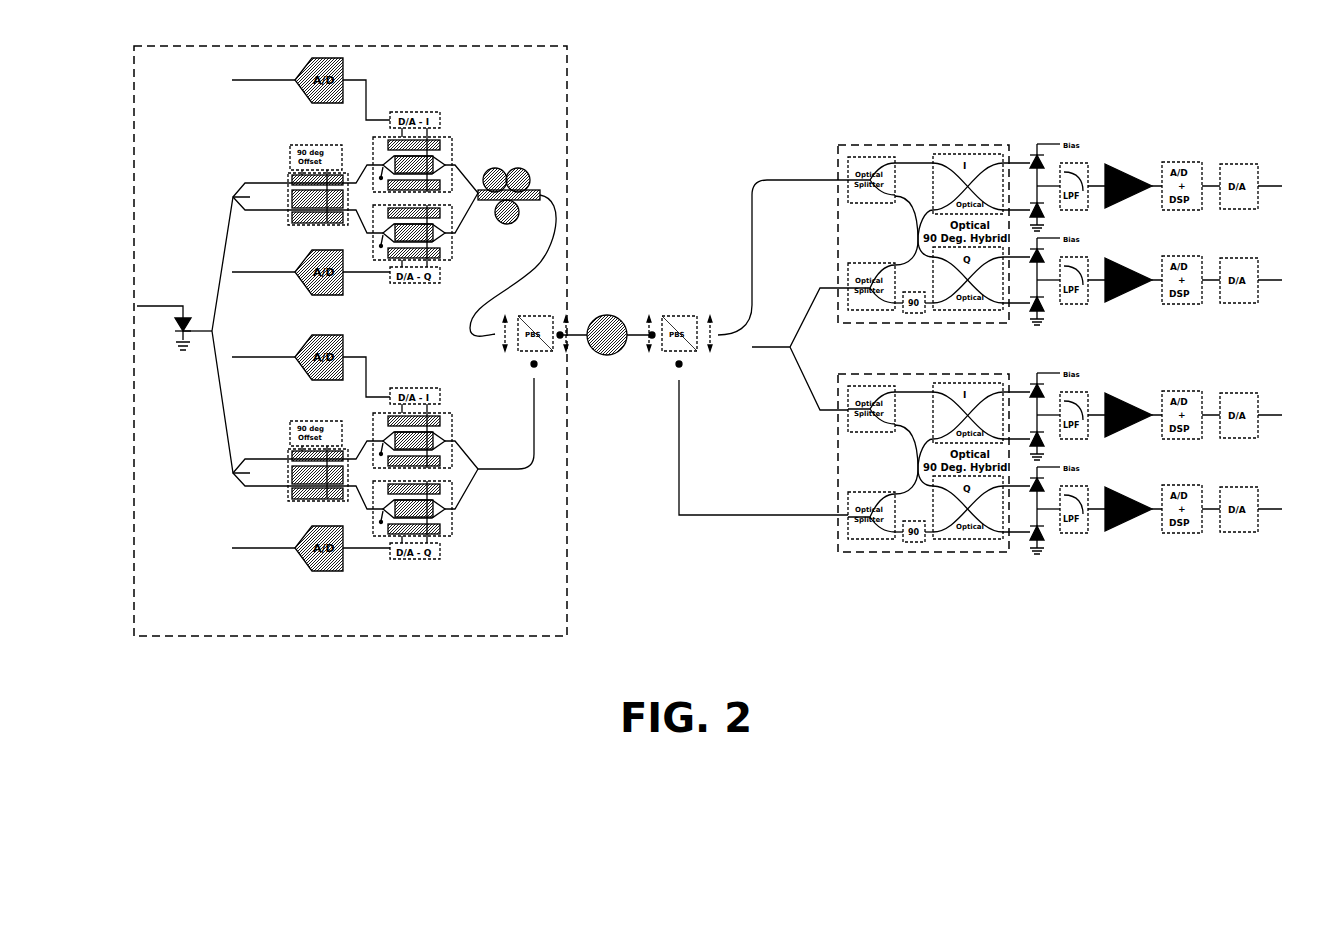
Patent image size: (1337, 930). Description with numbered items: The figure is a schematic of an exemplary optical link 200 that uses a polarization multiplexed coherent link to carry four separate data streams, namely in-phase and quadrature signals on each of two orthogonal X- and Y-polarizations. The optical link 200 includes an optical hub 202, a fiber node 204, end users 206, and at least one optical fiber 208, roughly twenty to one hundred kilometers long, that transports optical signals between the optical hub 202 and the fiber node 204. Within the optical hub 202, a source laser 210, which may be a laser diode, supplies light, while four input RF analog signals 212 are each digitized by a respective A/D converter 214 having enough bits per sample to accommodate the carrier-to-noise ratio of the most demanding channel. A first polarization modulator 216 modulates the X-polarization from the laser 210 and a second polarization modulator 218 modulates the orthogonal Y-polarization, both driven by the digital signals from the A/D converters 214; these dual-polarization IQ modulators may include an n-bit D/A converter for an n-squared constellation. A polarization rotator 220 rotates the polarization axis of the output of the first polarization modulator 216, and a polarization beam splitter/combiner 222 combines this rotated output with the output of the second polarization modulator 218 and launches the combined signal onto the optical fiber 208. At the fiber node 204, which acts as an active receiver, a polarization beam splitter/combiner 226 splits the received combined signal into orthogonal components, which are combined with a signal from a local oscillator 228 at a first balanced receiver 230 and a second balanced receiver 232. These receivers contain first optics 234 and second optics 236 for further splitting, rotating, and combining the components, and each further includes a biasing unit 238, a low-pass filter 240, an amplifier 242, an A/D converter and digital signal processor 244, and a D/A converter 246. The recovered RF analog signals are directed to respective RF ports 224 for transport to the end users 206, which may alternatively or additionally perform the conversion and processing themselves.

The optical link 200 is at (713, 65).
The optical hub 202 is at (553, 623).
The fiber node 204 is at (663, 592).
The end users 206 is at (1209, 275).
The optical fiber 208 is at (607, 358).
The source laser 210 is at (183, 378).
The input RF analog signals 212 is at (241, 315).
The analog-to-digital (A/D) converters 214 is at (303, 107).
The first polarization modulator 216 is at (450, 285).
The second polarization modulator 218 is at (465, 521).
The polarization rotator 220 is at (487, 170).
The polarization beam splitter/combiner 222 is at (538, 315).
The RF port 224 is at (1285, 340).
The polarization beam splitter/combiner 226 is at (678, 316).
The local oscillator 228 is at (794, 358).
The first balanced receiver 230 is at (1091, 207).
The second balanced receiver 232 is at (1163, 580).
The first optics 234 is at (907, 145).
The second optics 236 is at (837, 530).
The biasing unit 238 is at (1032, 126).
The low-pass filter 240 is at (1077, 126).
The amplifier 242 is at (1123, 148).
The A/D converter and digital signal processor (DSP) 244 is at (1180, 150).
The D/A converter 246 is at (1237, 150).